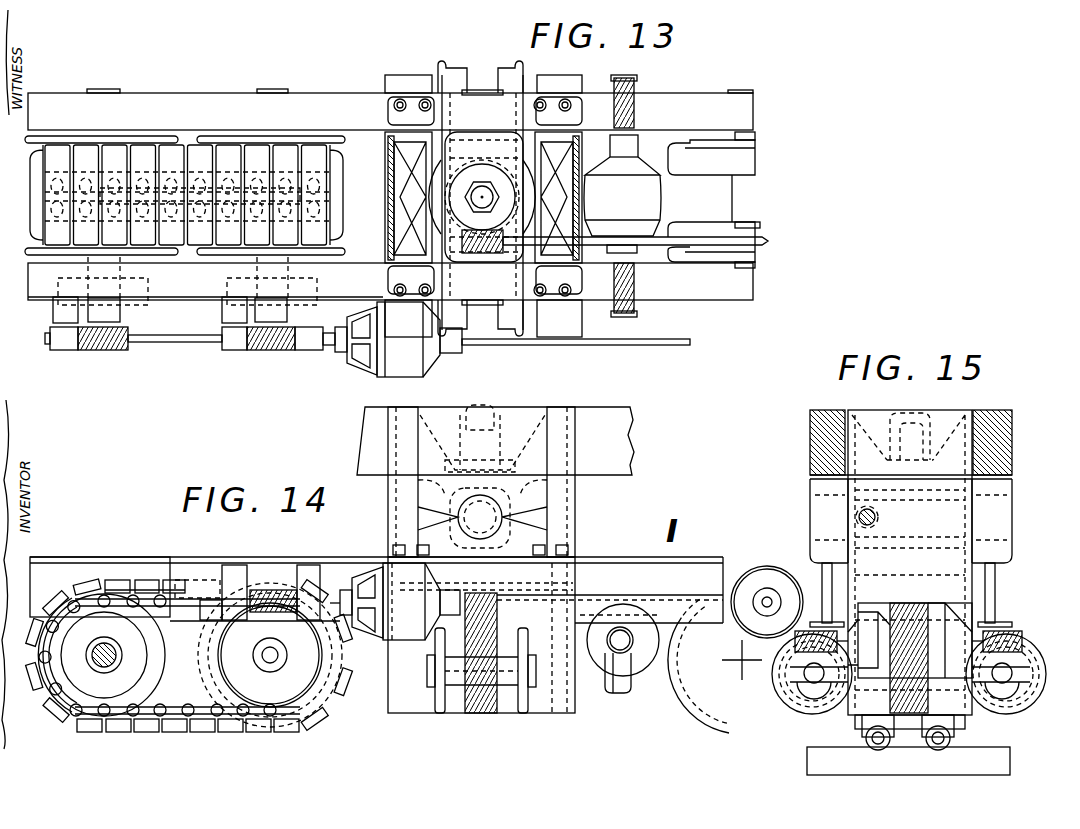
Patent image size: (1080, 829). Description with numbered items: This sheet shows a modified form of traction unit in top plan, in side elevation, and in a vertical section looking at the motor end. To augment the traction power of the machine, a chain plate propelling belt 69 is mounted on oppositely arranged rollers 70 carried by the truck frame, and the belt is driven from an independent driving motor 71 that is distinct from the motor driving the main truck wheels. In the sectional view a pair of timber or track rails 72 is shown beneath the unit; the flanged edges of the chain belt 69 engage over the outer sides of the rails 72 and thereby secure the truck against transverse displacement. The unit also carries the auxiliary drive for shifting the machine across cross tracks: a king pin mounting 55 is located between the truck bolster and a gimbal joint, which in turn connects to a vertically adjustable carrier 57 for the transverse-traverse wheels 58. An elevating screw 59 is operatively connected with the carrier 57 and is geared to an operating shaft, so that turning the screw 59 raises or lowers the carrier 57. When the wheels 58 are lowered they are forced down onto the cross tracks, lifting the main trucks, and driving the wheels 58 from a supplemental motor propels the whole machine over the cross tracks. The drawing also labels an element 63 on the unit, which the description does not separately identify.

In FIG. 14, the king pin mounting 55 is at (483, 452).
In FIG. 14, the vertically adjustable carrier 57 is at (560, 657).
In FIG. 14, the transverse-traverse wheels 58 is at (507, 737).
In FIG. 15, the transverse-traverse wheels 58 is at (778, 690).
In FIG. 14, the elevating screw 59 is at (548, 530).
In FIG. 15, the elevating screw 59 is at (1013, 700).
In FIG. 13, the adjusting screw 63 is at (622, 196).
In FIG. 14, the adjusting screw 63 is at (645, 630).
In FIG. 15, the adjusting screw 63 is at (938, 630).
In FIG. 13, the chain plate propelling belt 69 is at (322, 215).
In FIG. 14, the chain plate propelling belt 69 is at (200, 722).
In FIG. 13, the rollers 70 is at (235, 252).
In FIG. 14, the rollers 70 is at (192, 655).
In FIG. 13, the independent driving motor 71 is at (397, 358).
In FIG. 14, the independent driving motor 71 is at (390, 583).
In FIG. 15, the independent driving motor 71 is at (765, 582).
In FIG. 15, the timber or track rails 72 is at (873, 739).